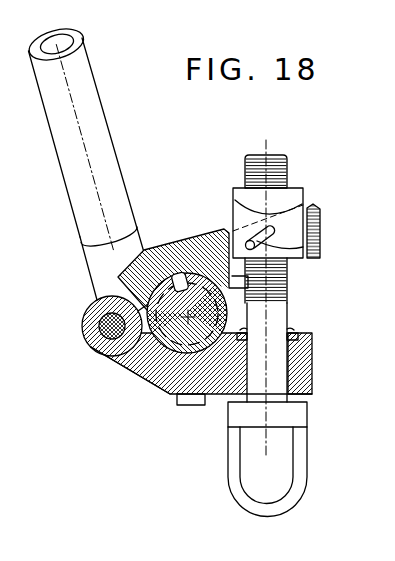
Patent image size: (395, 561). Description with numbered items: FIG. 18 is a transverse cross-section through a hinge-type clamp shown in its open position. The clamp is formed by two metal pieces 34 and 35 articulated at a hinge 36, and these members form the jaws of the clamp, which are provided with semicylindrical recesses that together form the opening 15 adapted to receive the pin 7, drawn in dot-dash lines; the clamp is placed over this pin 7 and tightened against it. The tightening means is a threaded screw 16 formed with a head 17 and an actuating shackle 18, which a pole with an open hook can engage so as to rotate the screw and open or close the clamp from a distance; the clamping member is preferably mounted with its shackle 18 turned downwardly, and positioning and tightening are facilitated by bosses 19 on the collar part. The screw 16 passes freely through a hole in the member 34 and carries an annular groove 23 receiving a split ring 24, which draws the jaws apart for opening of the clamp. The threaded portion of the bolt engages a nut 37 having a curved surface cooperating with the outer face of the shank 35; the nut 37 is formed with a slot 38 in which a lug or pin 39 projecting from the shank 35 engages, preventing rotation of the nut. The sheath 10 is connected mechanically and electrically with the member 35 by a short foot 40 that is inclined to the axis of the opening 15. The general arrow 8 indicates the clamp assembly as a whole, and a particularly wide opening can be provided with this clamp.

The pin 7 is at (166, 358).
The clamp assembly 8 is at (127, 388).
The sheath 10 is at (100, 128).
The opening 15 is at (183, 276).
The threaded screw 16 is at (285, 162).
The head 17 is at (297, 413).
The shackle 18 is at (240, 495).
The bosses 19 is at (190, 406).
The annular groove 23 is at (278, 328).
The split ring 24 is at (242, 324).
The metal piece 34 is at (313, 368).
The metal piece 35 is at (320, 228).
The hinge 36 is at (95, 350).
The nut 37 is at (292, 197).
The slot 38 is at (304, 250).
The lug or pin 39 is at (243, 242).
The short foot 40 is at (93, 265).